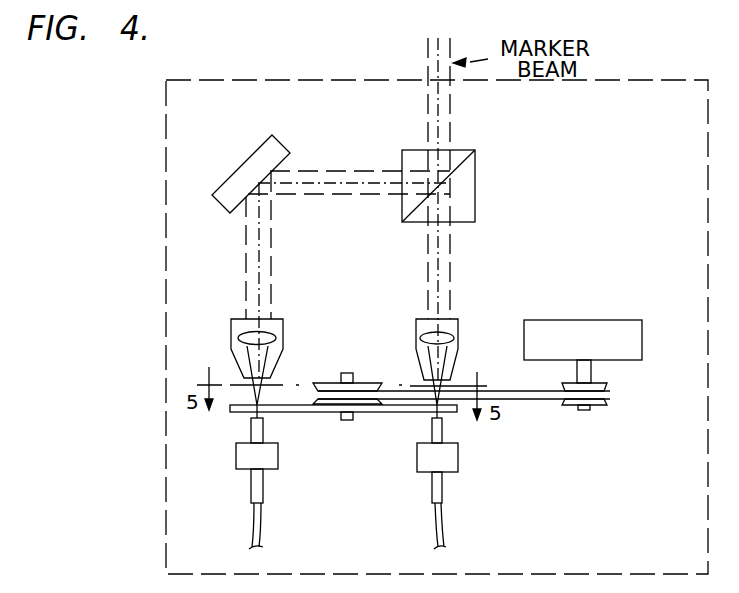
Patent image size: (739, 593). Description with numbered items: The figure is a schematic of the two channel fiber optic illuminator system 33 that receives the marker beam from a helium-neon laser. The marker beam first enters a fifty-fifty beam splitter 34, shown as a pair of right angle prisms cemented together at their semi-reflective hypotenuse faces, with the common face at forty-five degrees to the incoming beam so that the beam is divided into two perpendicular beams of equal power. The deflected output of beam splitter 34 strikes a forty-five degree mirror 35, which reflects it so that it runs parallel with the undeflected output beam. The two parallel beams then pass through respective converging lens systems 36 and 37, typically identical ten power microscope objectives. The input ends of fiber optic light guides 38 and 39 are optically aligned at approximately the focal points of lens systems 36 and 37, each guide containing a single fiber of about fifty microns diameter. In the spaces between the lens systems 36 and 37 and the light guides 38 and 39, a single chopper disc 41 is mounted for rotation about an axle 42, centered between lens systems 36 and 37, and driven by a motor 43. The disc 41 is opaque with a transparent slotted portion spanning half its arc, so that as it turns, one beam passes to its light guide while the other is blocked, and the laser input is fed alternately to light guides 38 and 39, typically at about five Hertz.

The two channel fiber optic illuminator system 33 is at (238, 51).
The beam splitter 34 is at (470, 178).
The mirror 35 is at (275, 150).
The converging lens system 36 is at (275, 328).
The converging lens system 37 is at (455, 325).
The fiber optic light guide 38 is at (262, 525).
The fiber optic light guide 39 is at (444, 525).
The chopper disc 41 is at (457, 413).
The axle 42 is at (348, 373).
The motor 43 is at (602, 320).